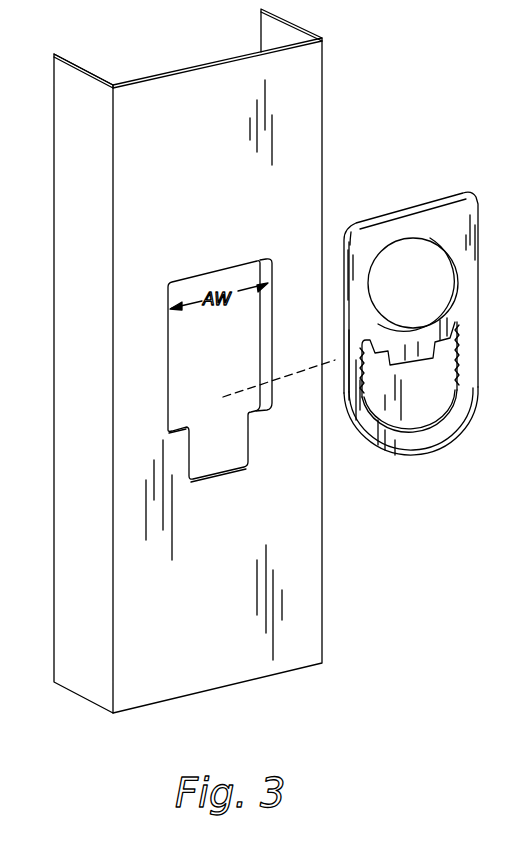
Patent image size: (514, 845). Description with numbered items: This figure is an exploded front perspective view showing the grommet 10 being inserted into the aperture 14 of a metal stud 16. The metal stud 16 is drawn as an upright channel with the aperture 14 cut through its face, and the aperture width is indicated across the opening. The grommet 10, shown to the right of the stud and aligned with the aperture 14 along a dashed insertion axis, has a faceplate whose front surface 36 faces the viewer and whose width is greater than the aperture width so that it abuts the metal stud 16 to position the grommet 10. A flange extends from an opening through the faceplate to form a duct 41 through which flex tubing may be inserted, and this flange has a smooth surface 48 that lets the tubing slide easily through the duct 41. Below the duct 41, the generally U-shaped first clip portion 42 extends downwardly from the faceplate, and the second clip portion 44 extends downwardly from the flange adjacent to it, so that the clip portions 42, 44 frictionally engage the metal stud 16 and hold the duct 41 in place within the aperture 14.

The metal stud 16 is at (177, 99).
The aperture 14 is at (190, 350).
The grommet 10 is at (429, 316).
The smooth surface 48 is at (420, 268).
The duct 41 is at (433, 313).
The front surface 36 is at (380, 247).
The second clip portion 44 is at (436, 378).
The first clip portion 42 is at (438, 422).